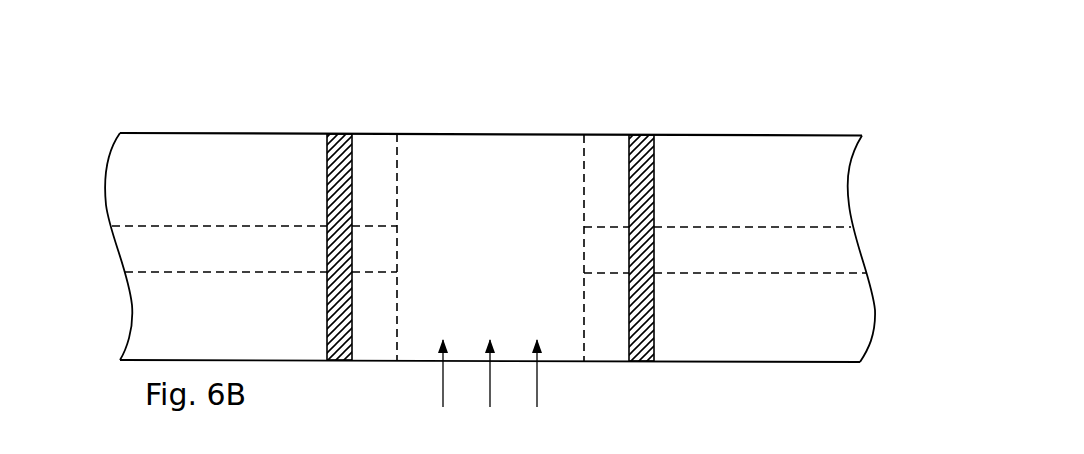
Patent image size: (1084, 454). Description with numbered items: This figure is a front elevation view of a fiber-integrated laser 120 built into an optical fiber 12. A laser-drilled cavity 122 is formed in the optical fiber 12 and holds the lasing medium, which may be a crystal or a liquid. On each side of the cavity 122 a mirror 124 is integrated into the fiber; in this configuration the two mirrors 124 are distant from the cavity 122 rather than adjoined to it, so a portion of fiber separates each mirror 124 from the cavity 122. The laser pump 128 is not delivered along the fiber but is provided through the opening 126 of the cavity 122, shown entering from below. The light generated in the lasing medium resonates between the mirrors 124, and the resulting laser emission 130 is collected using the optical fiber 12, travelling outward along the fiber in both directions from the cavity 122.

The optical fiber 12 is at (748, 135).
The fiber-integrated laser 120 is at (212, 112).
The cavity 122 is at (563, 157).
The mirror 124 is at (654, 217).
The opening 126 is at (563, 365).
The laser pump 128 is at (490, 389).
The laser emission 130 is at (105, 246).